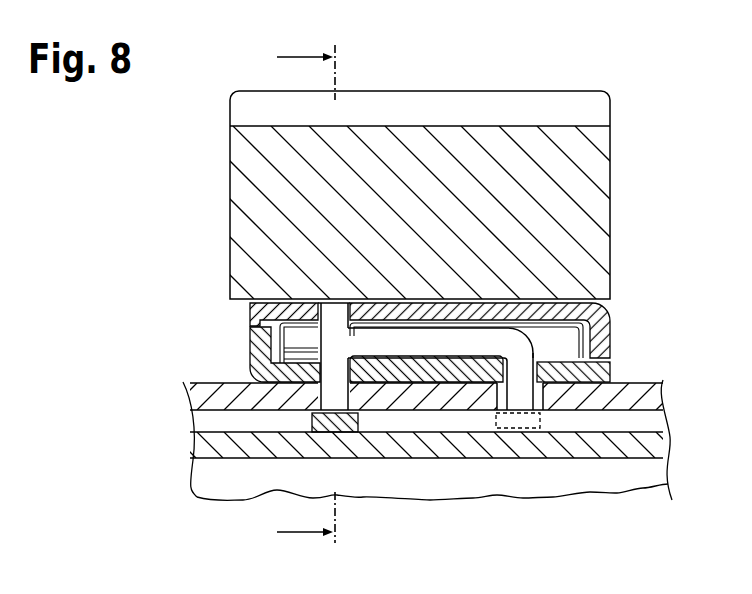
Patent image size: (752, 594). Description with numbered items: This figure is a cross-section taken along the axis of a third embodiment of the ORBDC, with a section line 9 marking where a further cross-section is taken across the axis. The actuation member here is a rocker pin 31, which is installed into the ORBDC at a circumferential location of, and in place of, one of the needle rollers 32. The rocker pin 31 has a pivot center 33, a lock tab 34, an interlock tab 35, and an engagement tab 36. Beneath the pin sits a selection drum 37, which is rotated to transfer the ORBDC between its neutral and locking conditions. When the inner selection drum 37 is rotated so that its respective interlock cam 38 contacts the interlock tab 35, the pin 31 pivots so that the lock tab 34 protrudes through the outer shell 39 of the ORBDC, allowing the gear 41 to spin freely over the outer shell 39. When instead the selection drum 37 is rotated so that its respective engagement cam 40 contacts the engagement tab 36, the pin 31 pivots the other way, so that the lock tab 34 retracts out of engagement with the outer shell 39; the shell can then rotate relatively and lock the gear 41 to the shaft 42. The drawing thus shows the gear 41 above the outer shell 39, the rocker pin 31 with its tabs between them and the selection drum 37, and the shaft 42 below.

The section line 9- 9 is at (292, 295).
The rocker pin 31 is at (478, 338).
The needle rollers 32 is at (562, 338).
The pivot center 33 is at (445, 357).
The lock tab 34 is at (335, 308).
The interlock tab 35 is at (323, 411).
The engagement tab 36 is at (510, 400).
The selection drum 37 is at (205, 443).
The interlock cam 38 is at (362, 422).
The outer shell 39 is at (248, 312).
The engagement cam 40 is at (540, 418).
The gear 41 is at (600, 172).
The shaft 42 is at (643, 475).